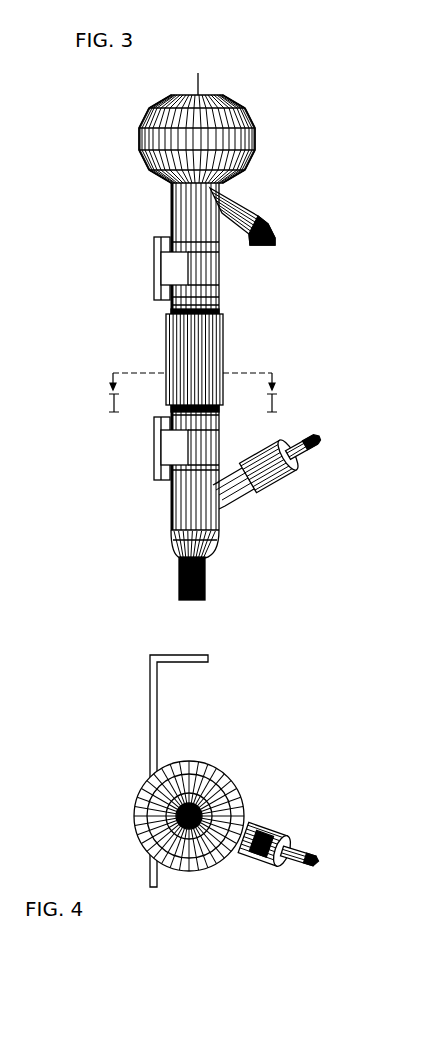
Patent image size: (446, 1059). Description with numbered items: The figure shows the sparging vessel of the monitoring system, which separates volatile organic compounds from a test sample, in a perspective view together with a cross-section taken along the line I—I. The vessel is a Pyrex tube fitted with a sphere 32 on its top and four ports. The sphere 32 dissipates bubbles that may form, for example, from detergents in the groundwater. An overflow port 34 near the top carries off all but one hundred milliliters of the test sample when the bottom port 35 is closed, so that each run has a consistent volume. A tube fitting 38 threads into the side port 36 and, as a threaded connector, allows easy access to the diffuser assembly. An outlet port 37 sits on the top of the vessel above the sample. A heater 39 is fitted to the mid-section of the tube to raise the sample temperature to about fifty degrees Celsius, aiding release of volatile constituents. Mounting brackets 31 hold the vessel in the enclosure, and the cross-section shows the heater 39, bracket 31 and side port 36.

In FIG. 3, the mounting brackets 31 is at (150, 274).
In FIG. 4, the mounting brackets 31 is at (147, 727).
In FIG. 3, the sphere 32 is at (263, 138).
In FIG. 3, the overflow port 34 is at (286, 233).
In FIG. 3, the bottom port 35 is at (217, 598).
In FIG. 3, the side port 36 is at (327, 455).
In FIG. 4, the side port 36 is at (312, 834).
In FIG. 3, the outlet port 37 is at (207, 76).
In FIG. 3, the tube fitting 38 is at (291, 490).
In FIG. 3, the heater 39 is at (233, 352).
In FIG. 4, the heater 39 is at (226, 787).